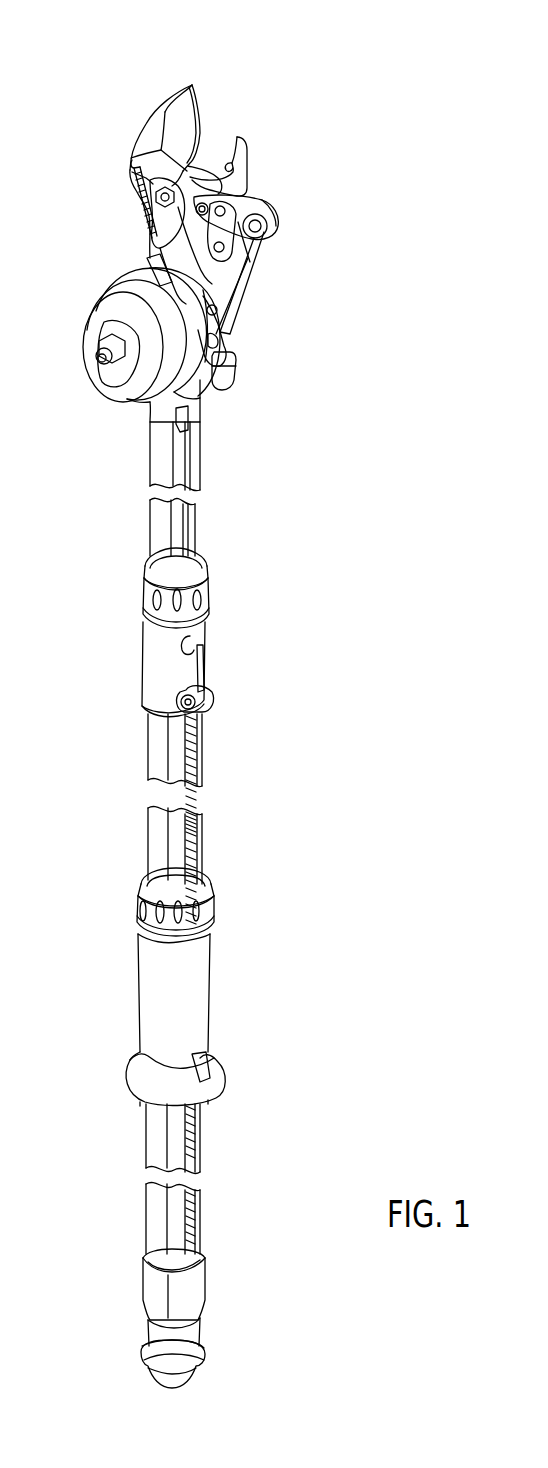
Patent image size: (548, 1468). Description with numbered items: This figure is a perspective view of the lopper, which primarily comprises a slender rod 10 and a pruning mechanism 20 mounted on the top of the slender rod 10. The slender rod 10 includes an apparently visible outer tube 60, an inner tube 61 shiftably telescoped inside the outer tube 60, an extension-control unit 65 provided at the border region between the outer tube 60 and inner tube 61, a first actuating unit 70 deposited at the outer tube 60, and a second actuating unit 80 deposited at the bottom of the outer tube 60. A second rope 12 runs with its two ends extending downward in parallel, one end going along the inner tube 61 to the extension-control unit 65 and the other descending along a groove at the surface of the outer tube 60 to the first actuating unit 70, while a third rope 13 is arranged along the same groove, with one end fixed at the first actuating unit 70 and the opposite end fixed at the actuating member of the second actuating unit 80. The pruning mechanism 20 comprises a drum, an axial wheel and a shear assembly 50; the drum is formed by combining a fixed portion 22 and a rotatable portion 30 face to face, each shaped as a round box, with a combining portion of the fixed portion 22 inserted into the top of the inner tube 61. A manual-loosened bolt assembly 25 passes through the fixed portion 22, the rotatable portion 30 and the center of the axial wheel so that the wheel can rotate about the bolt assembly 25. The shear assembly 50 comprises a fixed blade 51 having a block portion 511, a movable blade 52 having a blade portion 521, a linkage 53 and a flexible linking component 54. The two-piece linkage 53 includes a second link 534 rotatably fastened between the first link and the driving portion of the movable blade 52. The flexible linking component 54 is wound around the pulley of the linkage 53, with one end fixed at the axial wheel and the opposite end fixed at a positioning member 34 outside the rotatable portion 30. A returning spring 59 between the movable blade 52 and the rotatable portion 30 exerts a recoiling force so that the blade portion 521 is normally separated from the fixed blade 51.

The slender rod 10 is at (225, 473).
The second rope 12 is at (195, 741).
The third rope 13 is at (192, 1130).
The pruning mechanism 20 is at (220, 78).
The fixed portion 22 is at (90, 333).
The manual-loosened bolt assembly 25 is at (108, 318).
The rotatable portion 30 is at (222, 320).
The positioning member 34 is at (223, 364).
The shear assembly 50 is at (170, 88).
The fixed blade 51 is at (262, 138).
The block portion 511 is at (228, 167).
The movable blade 52 is at (148, 123).
The blade portion 521 is at (197, 117).
The linkage 53 is at (285, 212).
The second link 534 is at (245, 241).
The flexible linking component 54 is at (248, 282).
The returning spring 59 is at (132, 203).
The outer tube 60 is at (152, 752).
The inner tube 61 is at (158, 520).
The extension-control unit 65 is at (222, 605).
The first actuating unit 70 is at (225, 890).
The second actuating unit 80 is at (215, 1318).